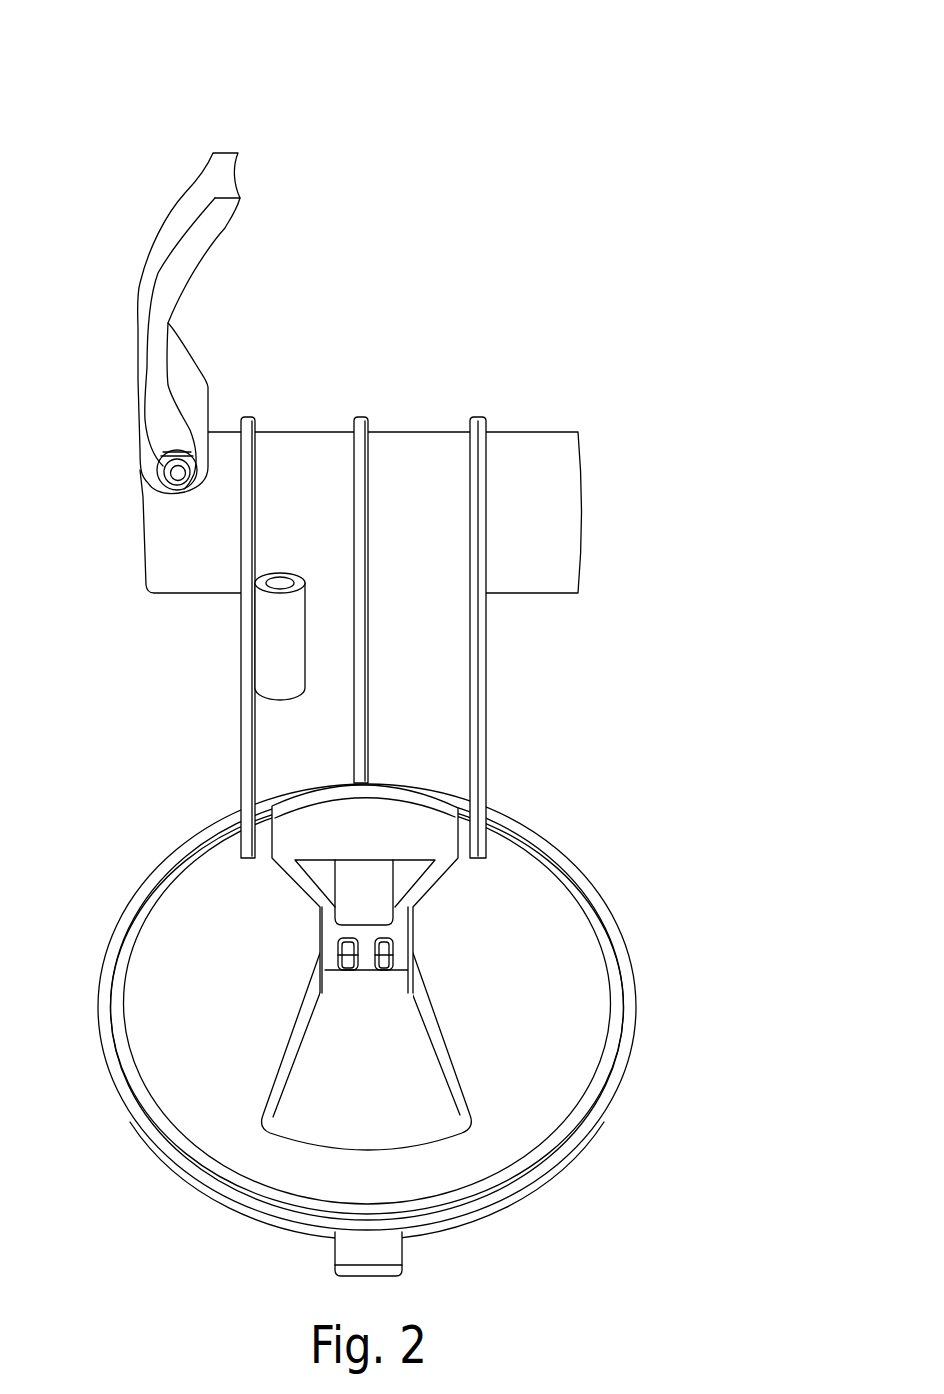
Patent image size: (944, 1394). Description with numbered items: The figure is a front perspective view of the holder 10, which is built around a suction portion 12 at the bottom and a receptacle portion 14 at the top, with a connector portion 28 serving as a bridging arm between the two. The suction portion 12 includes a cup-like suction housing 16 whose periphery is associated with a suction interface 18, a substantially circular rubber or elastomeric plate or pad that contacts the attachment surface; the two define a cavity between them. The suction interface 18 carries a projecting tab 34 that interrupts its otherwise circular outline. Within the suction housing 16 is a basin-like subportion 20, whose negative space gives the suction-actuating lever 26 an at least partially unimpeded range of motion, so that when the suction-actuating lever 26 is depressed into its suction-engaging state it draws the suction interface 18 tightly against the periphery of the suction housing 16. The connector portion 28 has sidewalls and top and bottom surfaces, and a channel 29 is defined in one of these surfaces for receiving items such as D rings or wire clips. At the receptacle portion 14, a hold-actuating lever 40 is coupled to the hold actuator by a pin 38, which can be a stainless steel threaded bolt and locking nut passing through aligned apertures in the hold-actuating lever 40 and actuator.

The holder 10 is at (584, 124).
The suction portion 12 is at (647, 897).
The receptacle portion 14 is at (578, 434).
The suction housing 16 is at (573, 1003).
The suction interface 18 is at (612, 1106).
The basin-like subportion 20 is at (300, 1105).
The suction-actuating lever 26 is at (432, 840).
The connector portion 28 is at (452, 663).
The channel 29 is at (260, 590).
The tab 34 is at (405, 1266).
The pin 38 is at (158, 469).
The hold-actuating lever 40 is at (225, 228).